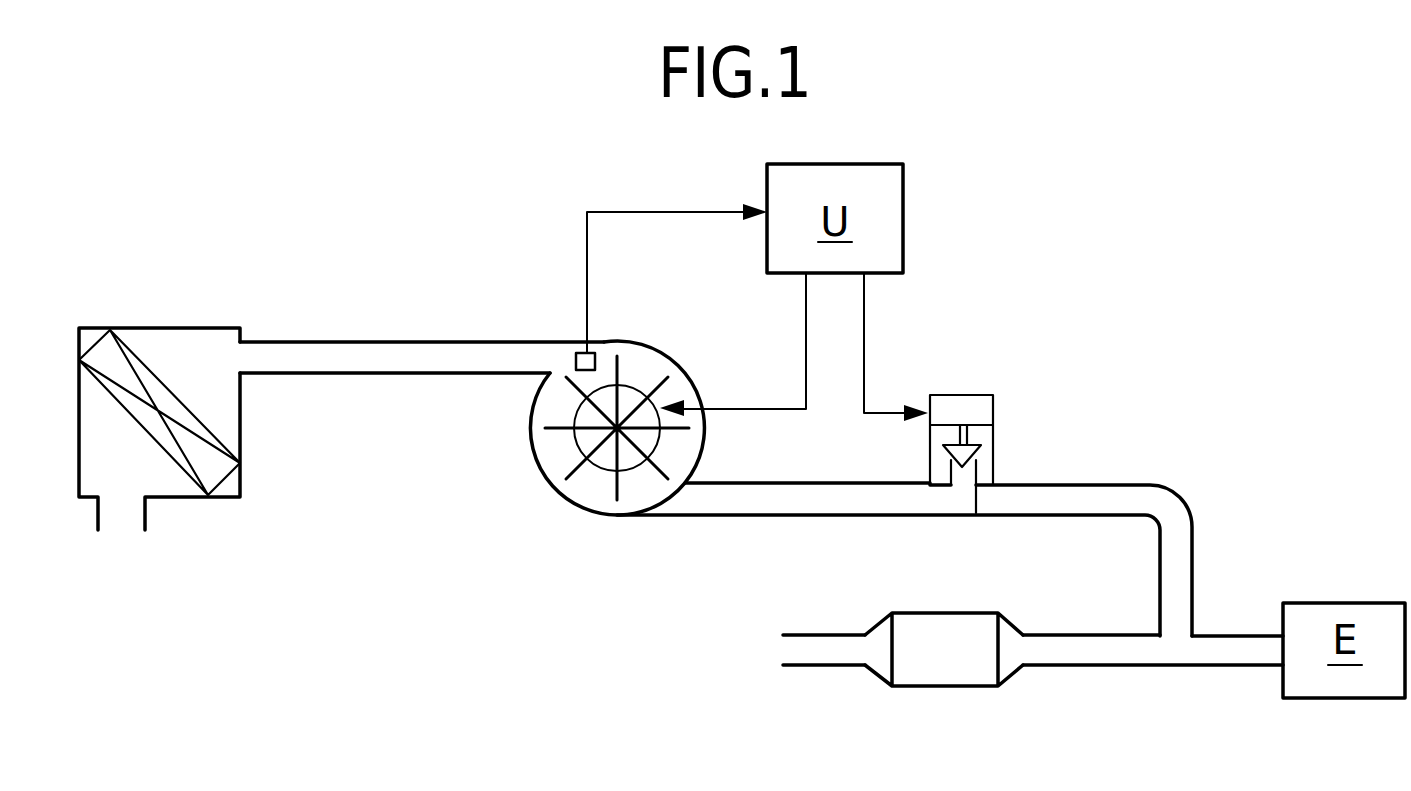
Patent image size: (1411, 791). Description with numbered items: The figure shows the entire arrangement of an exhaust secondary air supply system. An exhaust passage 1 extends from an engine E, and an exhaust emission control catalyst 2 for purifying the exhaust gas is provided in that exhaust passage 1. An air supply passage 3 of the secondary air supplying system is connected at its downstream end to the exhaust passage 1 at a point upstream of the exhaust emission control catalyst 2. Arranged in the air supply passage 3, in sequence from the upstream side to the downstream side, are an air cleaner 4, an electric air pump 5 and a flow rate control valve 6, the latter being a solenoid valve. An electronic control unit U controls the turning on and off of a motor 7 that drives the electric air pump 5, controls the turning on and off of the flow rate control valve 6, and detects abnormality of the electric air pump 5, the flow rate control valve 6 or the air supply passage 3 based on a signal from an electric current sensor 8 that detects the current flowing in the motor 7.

The exhaust passage 1 is at (832, 667).
The exhaust emission control catalyst 2 is at (920, 613).
The air supply passage 3 is at (362, 373).
The air cleaner 4 is at (155, 327).
The electric air pump 5 is at (650, 339).
The flow rate control valve 6 is at (957, 392).
The motor 7 is at (595, 473).
The electric current sensor 8 is at (577, 358).